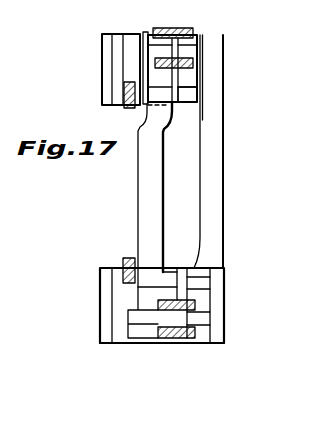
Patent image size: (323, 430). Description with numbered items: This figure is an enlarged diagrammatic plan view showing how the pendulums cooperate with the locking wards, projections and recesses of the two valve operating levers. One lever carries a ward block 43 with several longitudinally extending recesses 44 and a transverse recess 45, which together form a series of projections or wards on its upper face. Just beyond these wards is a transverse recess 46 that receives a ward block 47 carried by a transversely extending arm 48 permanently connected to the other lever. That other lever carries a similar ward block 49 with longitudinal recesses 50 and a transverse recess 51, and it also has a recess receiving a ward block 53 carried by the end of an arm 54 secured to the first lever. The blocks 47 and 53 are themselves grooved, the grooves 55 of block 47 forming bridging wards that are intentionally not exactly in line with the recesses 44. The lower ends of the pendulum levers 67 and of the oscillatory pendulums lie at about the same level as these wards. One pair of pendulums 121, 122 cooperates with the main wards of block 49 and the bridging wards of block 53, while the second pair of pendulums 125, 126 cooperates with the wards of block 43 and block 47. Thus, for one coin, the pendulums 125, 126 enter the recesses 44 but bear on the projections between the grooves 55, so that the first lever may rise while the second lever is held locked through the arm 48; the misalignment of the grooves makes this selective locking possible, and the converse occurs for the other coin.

The ward block 43 is at (140, 328).
The longitudinal recesses 44 is at (146, 300).
The transverse recess 45 is at (119, 278).
The transverse recess 46 is at (182, 270).
The ward block 47 is at (207, 339).
The transversely extending arm 48 is at (222, 172).
The ward block 49 is at (105, 53).
The longitudinal recesses 50 is at (195, 64).
The transverse recess 51 is at (117, 50).
The ward block 53 is at (152, 36).
The arm 54 is at (157, 175).
The grooves 55 is at (153, 88).
The lever 67 is at (124, 90).
The pendulum 121 is at (194, 31).
The pendulum 122 is at (195, 90).
The pendulum 125 is at (197, 331).
The pendulum 126 is at (198, 303).